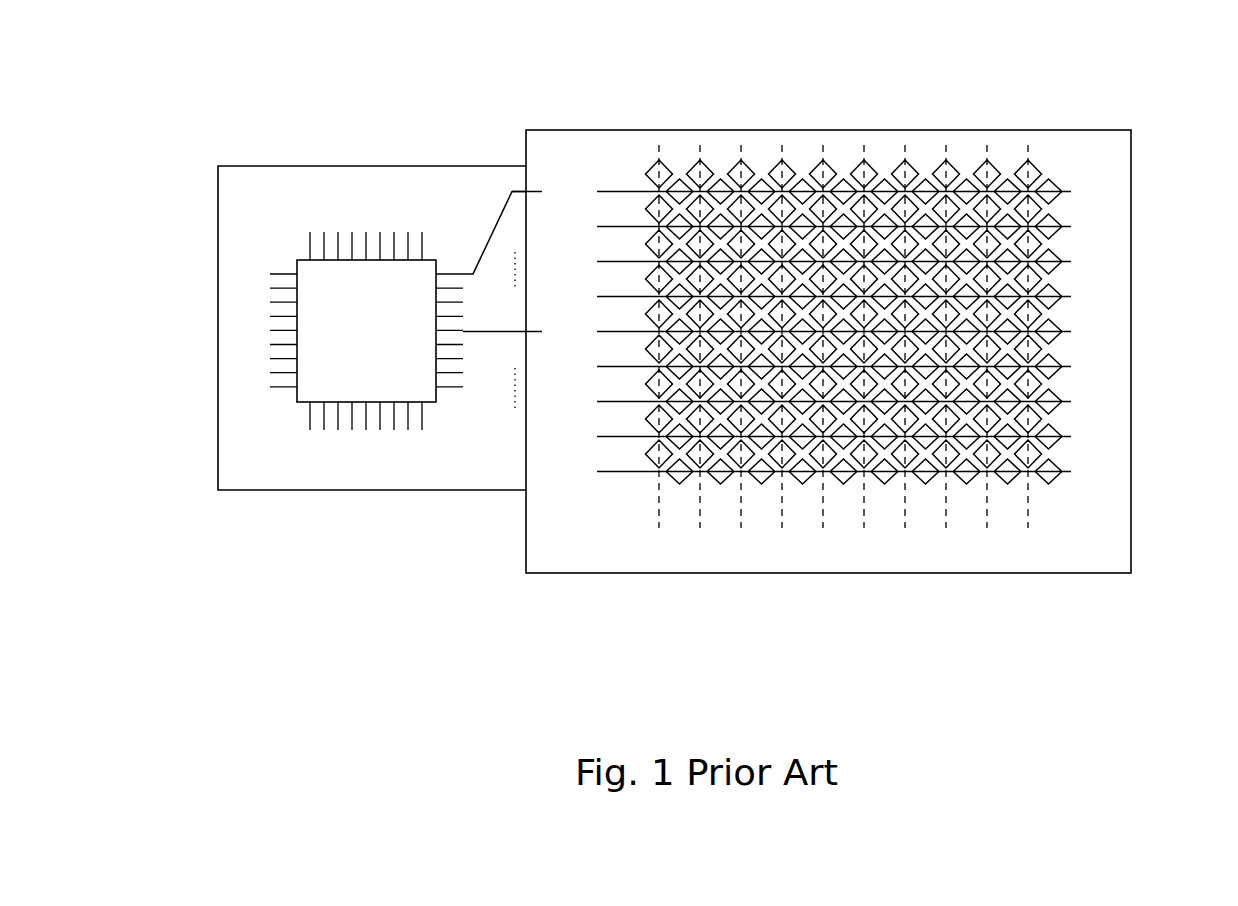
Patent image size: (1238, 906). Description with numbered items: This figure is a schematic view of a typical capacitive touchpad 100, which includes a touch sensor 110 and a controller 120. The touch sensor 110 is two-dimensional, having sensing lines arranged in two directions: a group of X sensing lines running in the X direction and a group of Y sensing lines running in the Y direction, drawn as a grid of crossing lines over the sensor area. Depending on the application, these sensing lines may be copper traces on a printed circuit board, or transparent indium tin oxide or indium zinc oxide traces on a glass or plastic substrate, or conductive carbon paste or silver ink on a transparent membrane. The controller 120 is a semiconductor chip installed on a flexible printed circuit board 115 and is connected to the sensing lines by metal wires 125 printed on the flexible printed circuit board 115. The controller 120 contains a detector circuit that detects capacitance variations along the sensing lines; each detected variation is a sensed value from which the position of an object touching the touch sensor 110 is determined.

The capacitive touchpad 100 is at (1150, 105).
The touch sensor 110 is at (1131, 350).
The flexible printed circuit board 115 is at (372, 166).
The controller 120 is at (297, 401).
The metal wires 125 is at (490, 238).